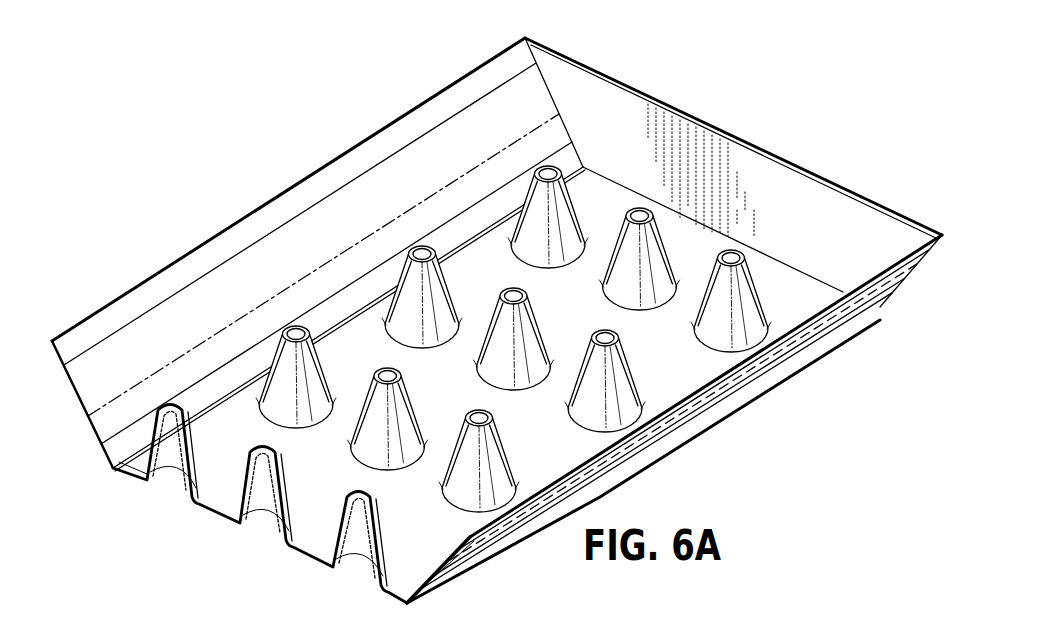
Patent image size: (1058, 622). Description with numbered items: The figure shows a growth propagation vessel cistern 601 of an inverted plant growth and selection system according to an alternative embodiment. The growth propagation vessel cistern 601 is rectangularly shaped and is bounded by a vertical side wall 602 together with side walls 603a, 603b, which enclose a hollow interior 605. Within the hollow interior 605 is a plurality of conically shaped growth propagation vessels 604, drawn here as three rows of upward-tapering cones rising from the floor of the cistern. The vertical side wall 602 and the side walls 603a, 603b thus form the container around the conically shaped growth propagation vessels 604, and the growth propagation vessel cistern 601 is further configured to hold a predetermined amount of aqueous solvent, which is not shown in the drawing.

The growth propagation vessel cistern 601 is at (501, 308).
The vertical side wall 602 is at (778, 199).
The side wall 603a is at (396, 103).
The side wall 603b is at (780, 347).
The conically shaped growth propagation vessel 604 is at (441, 337).
The hollow interior 605 is at (248, 446).